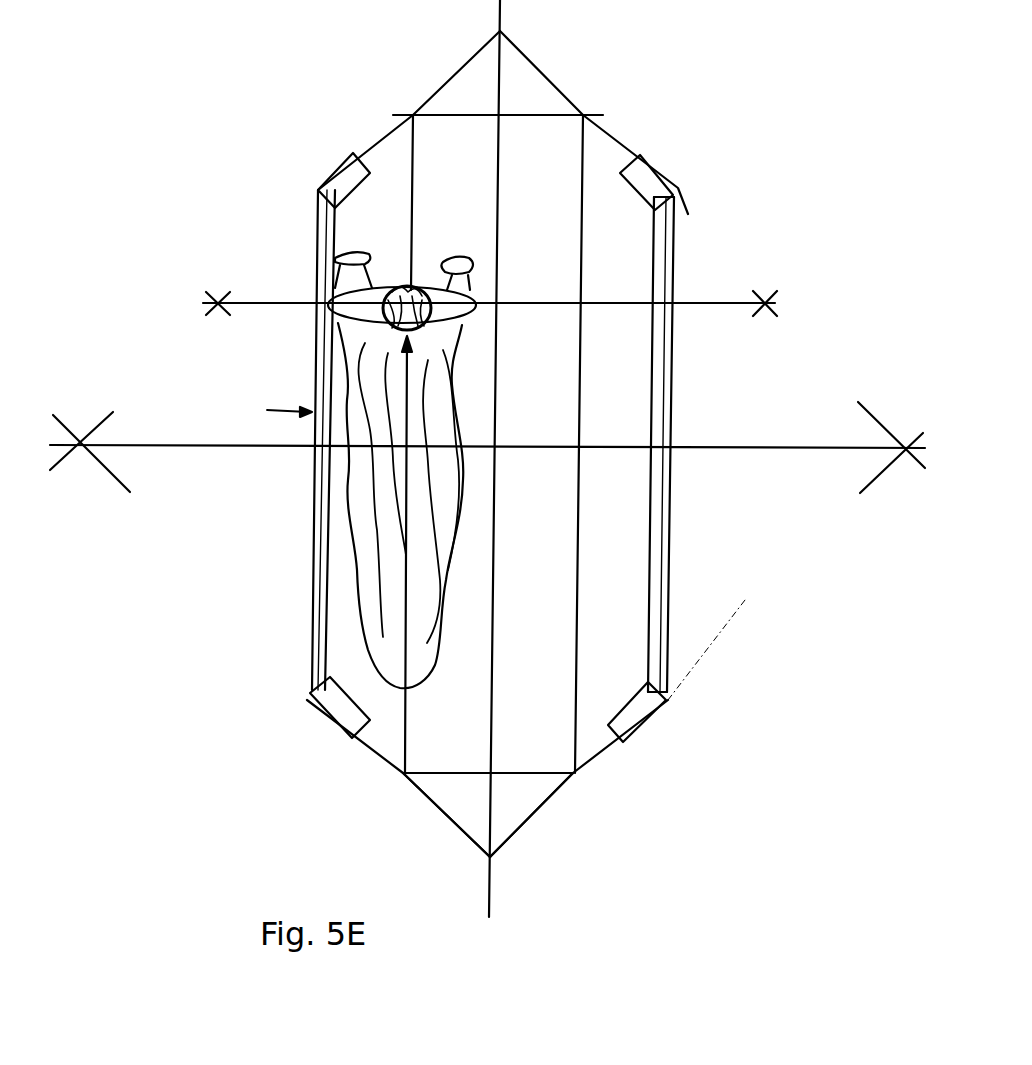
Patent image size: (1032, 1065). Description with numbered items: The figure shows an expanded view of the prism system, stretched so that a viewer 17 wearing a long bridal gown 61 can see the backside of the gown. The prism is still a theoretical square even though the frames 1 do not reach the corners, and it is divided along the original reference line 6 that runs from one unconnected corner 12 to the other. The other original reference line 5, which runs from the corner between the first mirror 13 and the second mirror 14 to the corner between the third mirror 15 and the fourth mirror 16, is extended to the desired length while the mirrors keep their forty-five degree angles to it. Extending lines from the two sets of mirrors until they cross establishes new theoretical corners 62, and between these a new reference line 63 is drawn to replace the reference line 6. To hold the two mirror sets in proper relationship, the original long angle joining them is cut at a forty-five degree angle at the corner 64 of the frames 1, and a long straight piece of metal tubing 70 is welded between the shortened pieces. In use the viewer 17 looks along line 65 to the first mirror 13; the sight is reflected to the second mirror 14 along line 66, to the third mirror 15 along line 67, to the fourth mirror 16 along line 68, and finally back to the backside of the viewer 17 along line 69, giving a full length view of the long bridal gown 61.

The frame 1 is at (455, 72).
The reference line 5 is at (490, 890).
The reference line 6 is at (713, 303).
The unconnected corner 12 is at (220, 295).
The first mirror 13 is at (388, 137).
The second mirror 14 is at (605, 135).
The third mirror 15 is at (548, 803).
The fourth mirror 16 is at (433, 802).
The viewer 17 is at (440, 307).
The long bridal gown 61 is at (443, 530).
The new theoretical corner 62 is at (82, 455).
The new reference line 63 is at (757, 449).
The corner 64 is at (670, 700).
The line 65 is at (412, 233).
The line 66 is at (483, 117).
The line 67 is at (577, 580).
The line 68 is at (515, 770).
The line 69 is at (407, 702).
The metal tubing 70 is at (665, 510).